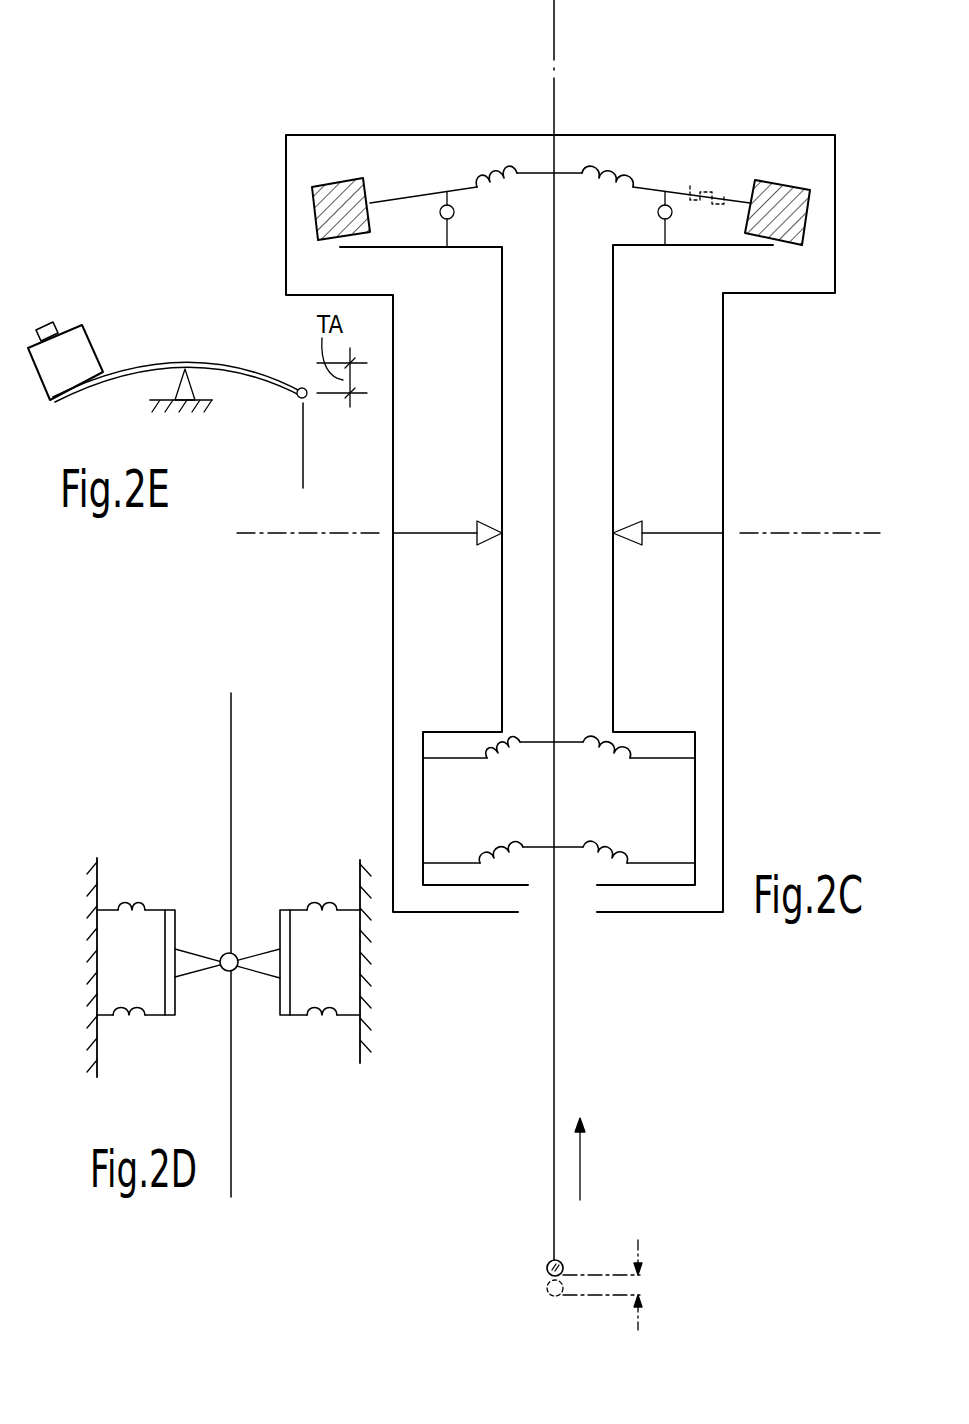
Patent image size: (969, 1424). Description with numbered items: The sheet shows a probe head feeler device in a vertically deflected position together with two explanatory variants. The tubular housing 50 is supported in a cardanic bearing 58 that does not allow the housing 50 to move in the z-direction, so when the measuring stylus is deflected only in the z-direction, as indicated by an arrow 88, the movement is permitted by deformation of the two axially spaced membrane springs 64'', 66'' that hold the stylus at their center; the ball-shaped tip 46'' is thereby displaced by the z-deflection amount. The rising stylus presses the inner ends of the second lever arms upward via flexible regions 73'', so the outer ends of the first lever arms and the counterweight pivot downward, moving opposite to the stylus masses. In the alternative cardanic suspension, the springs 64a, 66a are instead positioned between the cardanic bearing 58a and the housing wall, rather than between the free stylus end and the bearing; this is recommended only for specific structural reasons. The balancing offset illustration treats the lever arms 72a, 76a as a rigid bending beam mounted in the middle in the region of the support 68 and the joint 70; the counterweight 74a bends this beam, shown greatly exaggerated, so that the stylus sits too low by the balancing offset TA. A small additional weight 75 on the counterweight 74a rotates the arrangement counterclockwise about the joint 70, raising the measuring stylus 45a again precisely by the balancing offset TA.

In FIG. 2C, the housing 50 is at (613, 600).
In FIG. 2C, the cardanic bearing 58 is at (628, 514).
In FIG. 2C, the flexible regions 73'' is at (721, 126).
In FIG. 2C, the membrane spring 64'' is at (559, 776).
In FIG. 2C, the membrane spring 66'' is at (559, 813).
In FIG. 2C, the arrow 88 is at (580, 1162).
In FIG. 2C, the tip 46'' is at (560, 1267).
In FIG. 2D, the measuring stylus 45a is at (235, 1142).
In FIG. 2E, the measuring stylus 45a is at (303, 445).
In FIG. 2D, the spring 64a is at (132, 907).
In FIG. 2D, the spring 66a is at (307, 1018).
In FIG. 2D, the cardanic bearing 58a is at (240, 950).
In FIG. 2E, the counterweight 74a is at (80, 355).
In FIG. 2E, the additional weight 75 is at (47, 322).
In FIG. 2E, the first lever arm 72a is at (137, 363).
In FIG. 2E, the second lever arm 76a is at (253, 363).
In FIG. 2E, the axial support 68 is at (188, 382).
In FIG. 2E, the joint 70 is at (181, 406).